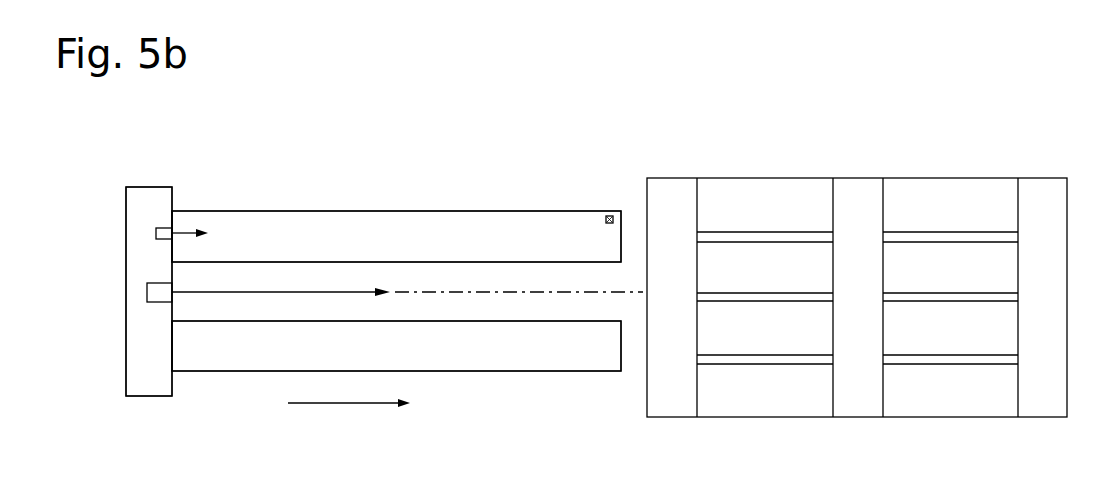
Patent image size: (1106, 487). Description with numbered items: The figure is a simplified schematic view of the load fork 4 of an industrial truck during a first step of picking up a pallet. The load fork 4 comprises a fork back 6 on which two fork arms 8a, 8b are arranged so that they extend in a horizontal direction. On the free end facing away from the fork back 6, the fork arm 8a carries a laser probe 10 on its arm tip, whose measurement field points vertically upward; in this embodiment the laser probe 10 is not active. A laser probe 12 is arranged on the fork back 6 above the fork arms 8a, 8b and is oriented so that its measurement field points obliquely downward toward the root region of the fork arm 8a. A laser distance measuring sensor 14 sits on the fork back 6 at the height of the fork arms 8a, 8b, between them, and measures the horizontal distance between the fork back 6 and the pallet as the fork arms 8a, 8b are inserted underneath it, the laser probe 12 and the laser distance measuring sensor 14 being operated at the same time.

The load fork 4 is at (203, 188).
The fork back 6 is at (149, 205).
The fork arm 8a is at (390, 233).
The fork arm 8b is at (437, 348).
The laser probe 10 is at (610, 216).
The laser probe 12 is at (156, 235).
The laser distance measuring sensor 14 is at (157, 302).